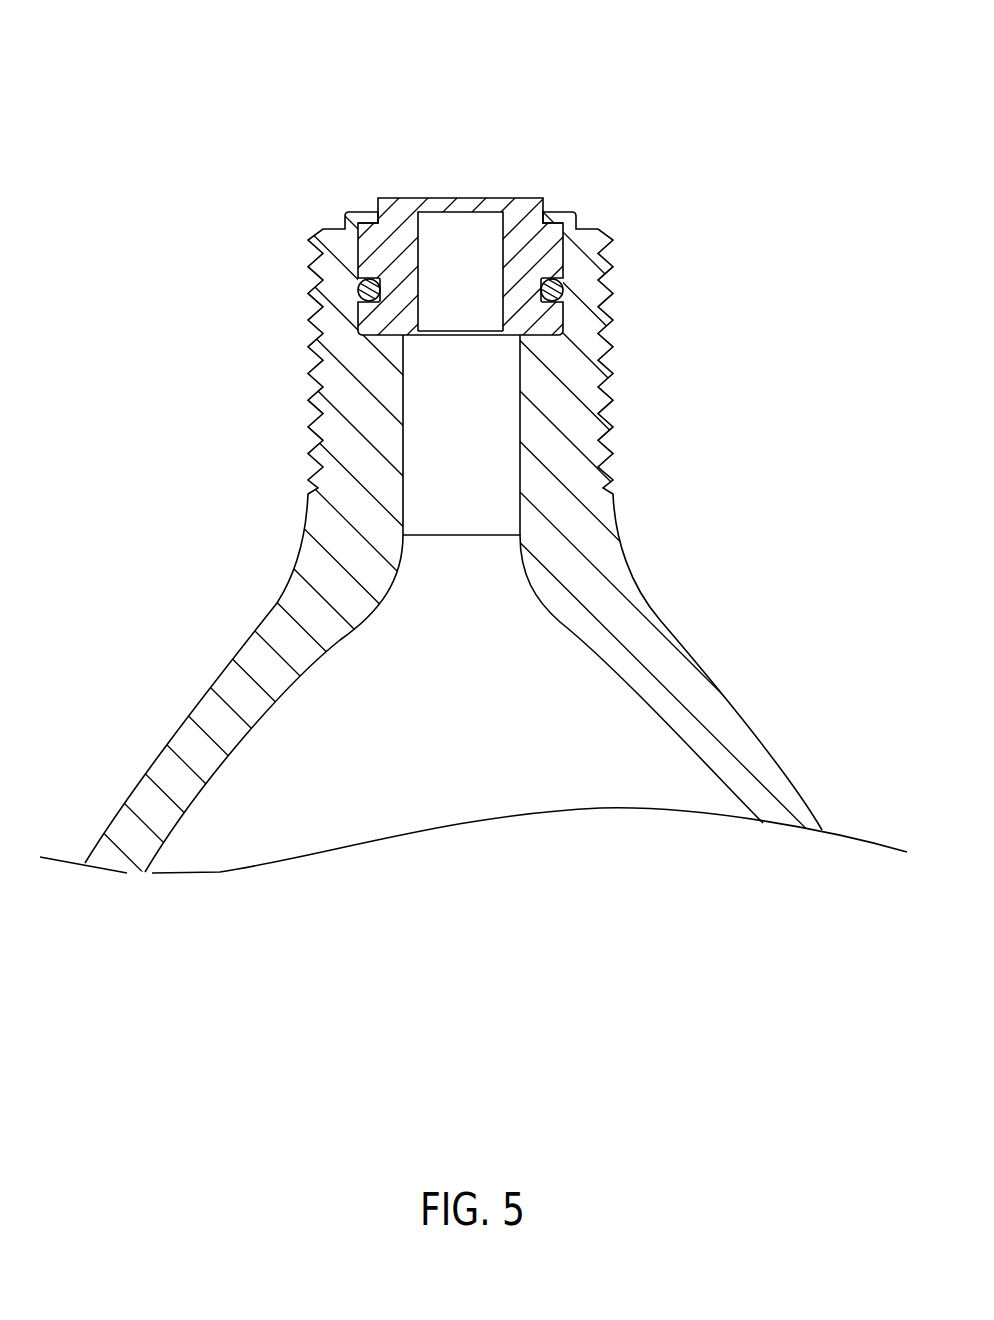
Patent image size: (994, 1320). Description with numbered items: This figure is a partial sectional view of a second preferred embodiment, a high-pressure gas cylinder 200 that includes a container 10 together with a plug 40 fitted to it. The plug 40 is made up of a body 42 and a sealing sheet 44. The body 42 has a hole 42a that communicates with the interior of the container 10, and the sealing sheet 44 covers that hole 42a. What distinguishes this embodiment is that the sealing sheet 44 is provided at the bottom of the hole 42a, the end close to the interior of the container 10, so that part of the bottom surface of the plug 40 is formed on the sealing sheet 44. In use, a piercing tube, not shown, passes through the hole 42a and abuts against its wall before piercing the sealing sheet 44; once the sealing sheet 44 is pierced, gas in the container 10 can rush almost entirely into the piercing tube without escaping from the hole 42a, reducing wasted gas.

The high-pressure gas cylinder 200 is at (200, 157).
The container 10 is at (747, 720).
The plug 40 is at (532, 198).
The body 42 is at (550, 243).
The hole 42a is at (477, 317).
The sealing sheet 44 is at (457, 335).